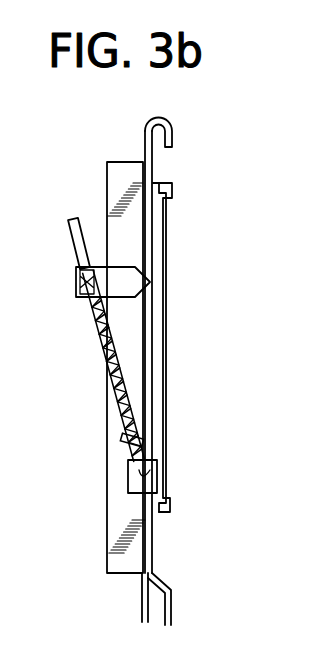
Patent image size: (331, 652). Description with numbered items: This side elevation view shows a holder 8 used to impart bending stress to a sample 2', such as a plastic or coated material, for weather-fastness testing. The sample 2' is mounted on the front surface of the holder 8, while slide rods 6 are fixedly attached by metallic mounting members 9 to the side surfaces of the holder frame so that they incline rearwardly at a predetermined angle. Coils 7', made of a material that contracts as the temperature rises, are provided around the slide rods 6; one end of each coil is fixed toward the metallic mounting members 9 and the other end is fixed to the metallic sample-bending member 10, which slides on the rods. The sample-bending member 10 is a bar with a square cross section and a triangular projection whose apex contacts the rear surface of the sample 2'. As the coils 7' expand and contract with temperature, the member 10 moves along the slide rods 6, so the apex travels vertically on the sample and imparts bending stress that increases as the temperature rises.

The holder 8 is at (99, 137).
The sample 2' is at (171, 372).
The metallic sample-bending member 10 is at (125, 278).
The slide rods 6 is at (72, 233).
The coils 7' is at (89, 366).
The metallic mounting members 9 is at (128, 491).